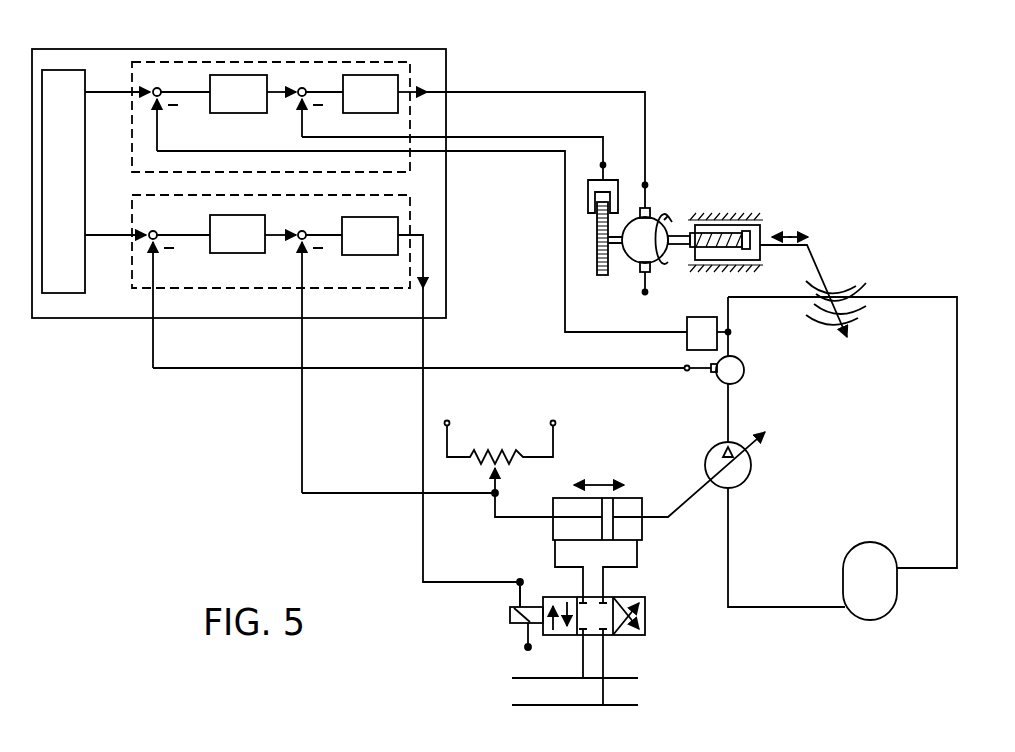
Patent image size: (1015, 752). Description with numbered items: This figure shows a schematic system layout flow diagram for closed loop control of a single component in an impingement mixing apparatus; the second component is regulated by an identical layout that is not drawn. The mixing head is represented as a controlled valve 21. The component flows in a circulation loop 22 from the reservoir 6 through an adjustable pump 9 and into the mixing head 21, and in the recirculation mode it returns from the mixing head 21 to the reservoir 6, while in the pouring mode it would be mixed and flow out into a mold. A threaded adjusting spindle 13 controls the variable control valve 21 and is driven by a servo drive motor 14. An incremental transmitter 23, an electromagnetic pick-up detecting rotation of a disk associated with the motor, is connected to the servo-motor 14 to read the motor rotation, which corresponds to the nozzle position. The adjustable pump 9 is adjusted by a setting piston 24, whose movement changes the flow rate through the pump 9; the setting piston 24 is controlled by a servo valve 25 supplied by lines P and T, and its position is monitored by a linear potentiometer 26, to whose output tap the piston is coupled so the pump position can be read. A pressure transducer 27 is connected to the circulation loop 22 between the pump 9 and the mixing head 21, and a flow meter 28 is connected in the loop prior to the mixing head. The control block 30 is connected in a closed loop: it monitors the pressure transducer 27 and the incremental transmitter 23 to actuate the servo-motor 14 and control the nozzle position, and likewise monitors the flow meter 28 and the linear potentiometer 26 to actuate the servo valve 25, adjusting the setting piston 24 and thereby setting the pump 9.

The control block 30 is at (385, 49).
The servo drive motor 14 is at (656, 224).
The incremental transmitter 23 is at (615, 190).
The threaded adjusting spindle 13 is at (741, 240).
The controlled valve 21 is at (855, 290).
The circulation loop 22 is at (957, 442).
The pressure transducer 27 is at (695, 317).
The flow meter 28 is at (744, 366).
The adjustable pump 9 is at (747, 483).
The reservoir 6 is at (867, 545).
The linear potentiometer 26 is at (487, 455).
The setting piston 24 is at (642, 528).
The servo valve 25 is at (598, 618).